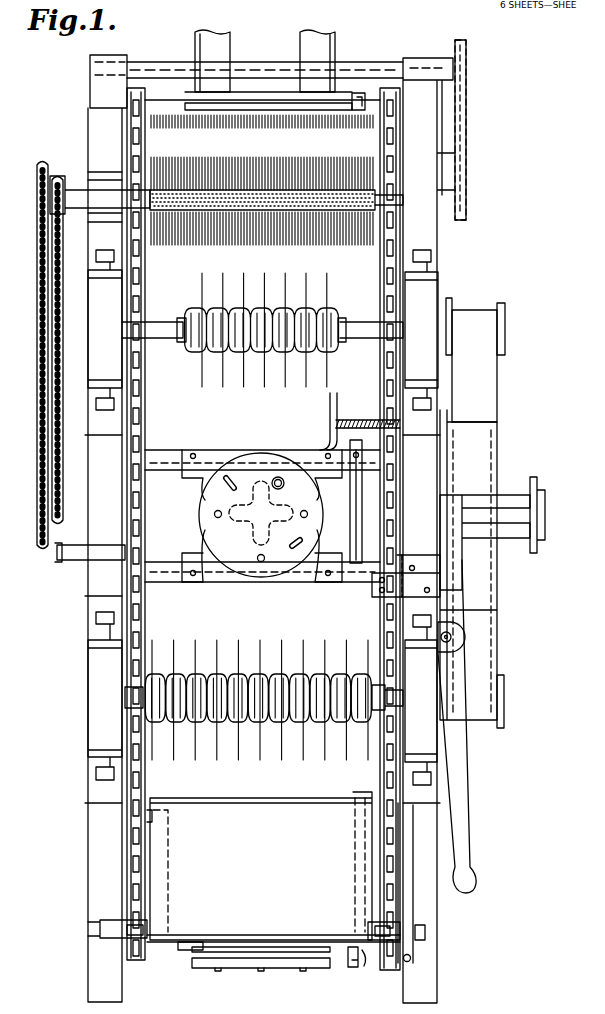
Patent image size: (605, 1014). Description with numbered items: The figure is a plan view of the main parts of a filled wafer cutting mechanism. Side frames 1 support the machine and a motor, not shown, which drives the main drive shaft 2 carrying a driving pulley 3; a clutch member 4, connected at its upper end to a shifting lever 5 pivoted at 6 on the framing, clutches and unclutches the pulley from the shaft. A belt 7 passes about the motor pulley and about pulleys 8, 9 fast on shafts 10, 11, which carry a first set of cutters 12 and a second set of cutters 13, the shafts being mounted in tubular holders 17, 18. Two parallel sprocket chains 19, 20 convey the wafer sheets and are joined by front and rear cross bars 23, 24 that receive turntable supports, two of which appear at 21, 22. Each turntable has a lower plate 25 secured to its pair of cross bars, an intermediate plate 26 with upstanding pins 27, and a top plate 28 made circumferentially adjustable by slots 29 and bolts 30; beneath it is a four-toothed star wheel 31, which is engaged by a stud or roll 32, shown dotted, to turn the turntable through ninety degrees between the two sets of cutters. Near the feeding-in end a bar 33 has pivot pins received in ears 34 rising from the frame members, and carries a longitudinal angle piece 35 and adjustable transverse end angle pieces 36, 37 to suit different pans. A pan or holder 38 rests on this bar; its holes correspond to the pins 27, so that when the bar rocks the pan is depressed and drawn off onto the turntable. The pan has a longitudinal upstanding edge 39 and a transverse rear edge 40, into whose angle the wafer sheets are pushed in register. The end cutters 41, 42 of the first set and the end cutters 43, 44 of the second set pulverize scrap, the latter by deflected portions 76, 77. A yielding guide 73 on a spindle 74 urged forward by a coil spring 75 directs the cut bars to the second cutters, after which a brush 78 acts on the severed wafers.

The side frame 1 is at (95, 830).
The main drive shaft 2 is at (545, 520).
The driving pulley 3 is at (495, 610).
The clutch member 4 is at (522, 512).
The shifting lever 5 is at (462, 772).
The pivot 6 is at (453, 637).
The belt 7 is at (483, 378).
The pulley 8 is at (505, 330).
The pulley 9 is at (503, 714).
The shaft 10 is at (162, 327).
The shaft 11 is at (395, 701).
The first set of cutters 12 is at (290, 762).
The second set of cutters 13 is at (285, 276).
The tubular holder 17 is at (95, 292).
The tubular holder 18 is at (88, 690).
The sprocket chain 19 is at (125, 862).
The sprocket chain 20 is at (375, 832).
The support 21 is at (184, 969).
The support 22 is at (290, 585).
The front cross bar 23 is at (157, 458).
The rear cross bar 24 is at (165, 570).
The lower plate 25 is at (200, 480).
The intermediate plate 26 is at (350, 966).
The pin 27 is at (262, 486).
The top plate 28 is at (303, 583).
The circumferential slot 29 is at (232, 476).
The bolt 30 is at (205, 448).
The star wheel 31 is at (277, 476).
The stud or roll 32 is at (293, 462).
The bar 33 is at (110, 930).
The ear 34 is at (88, 930).
The angle piece 35 is at (266, 946).
The end angle piece 36 is at (150, 945).
The end angle piece 37 is at (366, 963).
The pan or holder 38 is at (188, 804).
The upstanding edge 39 is at (365, 865).
The rear edge 40 is at (216, 940).
The end cutter 41 is at (150, 745).
The end cutter 42 is at (350, 750).
The end cutter 43 is at (202, 364).
The end cutter 44 is at (327, 380).
The guide 73 is at (329, 406).
The spindle 74 is at (351, 418).
The coil spring 75 is at (365, 426).
The deflected portion 76 is at (190, 343).
The deflected portion 77 is at (340, 320).
The brush 78 is at (243, 164).